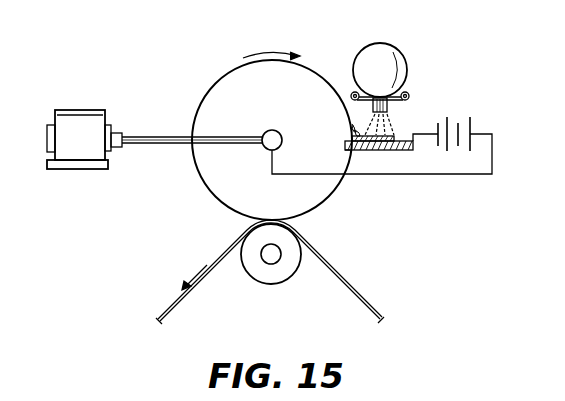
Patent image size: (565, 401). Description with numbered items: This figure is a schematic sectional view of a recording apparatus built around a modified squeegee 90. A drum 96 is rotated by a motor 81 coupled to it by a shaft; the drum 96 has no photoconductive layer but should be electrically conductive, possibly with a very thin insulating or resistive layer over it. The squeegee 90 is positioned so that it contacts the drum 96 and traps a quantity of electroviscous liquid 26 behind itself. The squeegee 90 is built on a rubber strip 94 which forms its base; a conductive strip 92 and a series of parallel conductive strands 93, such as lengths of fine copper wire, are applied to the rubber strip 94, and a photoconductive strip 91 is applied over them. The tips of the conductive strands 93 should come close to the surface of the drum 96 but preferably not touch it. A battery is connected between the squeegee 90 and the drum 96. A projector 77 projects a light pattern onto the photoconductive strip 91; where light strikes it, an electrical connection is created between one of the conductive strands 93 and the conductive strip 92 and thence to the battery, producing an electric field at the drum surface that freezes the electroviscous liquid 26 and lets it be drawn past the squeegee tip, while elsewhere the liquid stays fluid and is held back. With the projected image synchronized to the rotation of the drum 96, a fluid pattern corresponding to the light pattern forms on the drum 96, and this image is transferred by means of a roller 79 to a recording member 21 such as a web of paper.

The drum 96 is at (209, 92).
The motor 81 is at (75, 110).
The electroviscous liquid 26 is at (352, 126).
The projector 77 is at (407, 68).
The photoconductive strip 91 is at (393, 134).
The conductive strip 92 is at (405, 134).
The squeegee 90 is at (388, 156).
The rubber strip 94 is at (377, 151).
The conductive strands 93 is at (352, 152).
The roller 79 is at (288, 278).
The recording member 21 is at (362, 297).